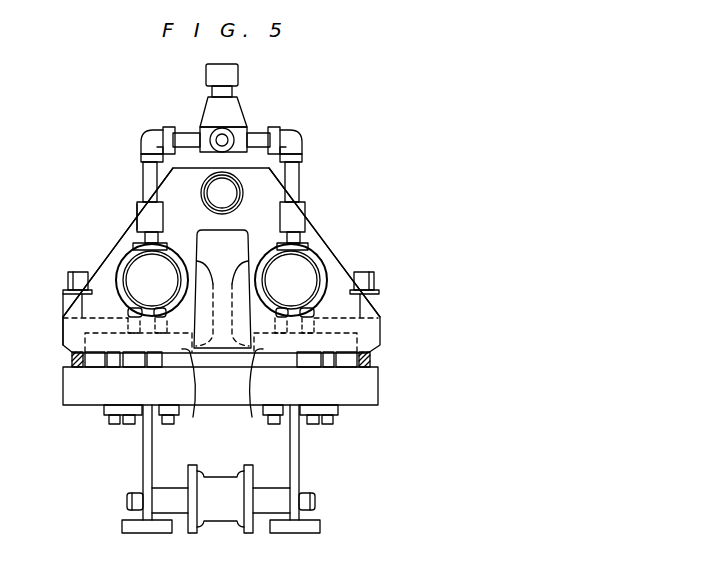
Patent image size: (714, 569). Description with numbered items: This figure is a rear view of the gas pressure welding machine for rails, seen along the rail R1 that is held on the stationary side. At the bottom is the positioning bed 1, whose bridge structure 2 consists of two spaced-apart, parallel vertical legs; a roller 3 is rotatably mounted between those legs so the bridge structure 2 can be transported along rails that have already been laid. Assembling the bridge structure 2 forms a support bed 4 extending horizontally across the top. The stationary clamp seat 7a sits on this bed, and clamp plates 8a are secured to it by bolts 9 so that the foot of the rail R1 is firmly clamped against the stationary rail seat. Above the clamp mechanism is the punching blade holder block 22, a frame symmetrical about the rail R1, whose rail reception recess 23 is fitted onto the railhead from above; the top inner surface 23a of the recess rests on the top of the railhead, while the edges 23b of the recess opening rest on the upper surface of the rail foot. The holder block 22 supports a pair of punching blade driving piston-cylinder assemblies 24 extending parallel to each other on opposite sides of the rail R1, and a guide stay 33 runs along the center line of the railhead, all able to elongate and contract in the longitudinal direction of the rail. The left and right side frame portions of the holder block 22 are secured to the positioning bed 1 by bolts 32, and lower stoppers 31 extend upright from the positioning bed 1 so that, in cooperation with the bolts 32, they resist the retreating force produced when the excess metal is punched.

The positioning bed 1 is at (141, 478).
The bridge structure 2 is at (143, 445).
The roller 3 is at (223, 508).
The support bed 4 is at (102, 407).
The stationary clamp seat 7a is at (63, 388).
The clamp plate 8a is at (85, 333).
The bolt 9 is at (110, 318).
The punching blade holder block 22 is at (327, 242).
The rail reception recess 23 is at (305, 226).
The top inner surface of the recess 23a is at (230, 227).
The edges of the opening of the rail reception recess 23b is at (226, 397).
The punching blade driving piston-cylinder assembly 24 is at (132, 267).
The lower stopper 31 is at (315, 361).
The bolt 32 is at (74, 272).
The guide stay 33 is at (202, 188).
The rail R1 is at (138, 210).